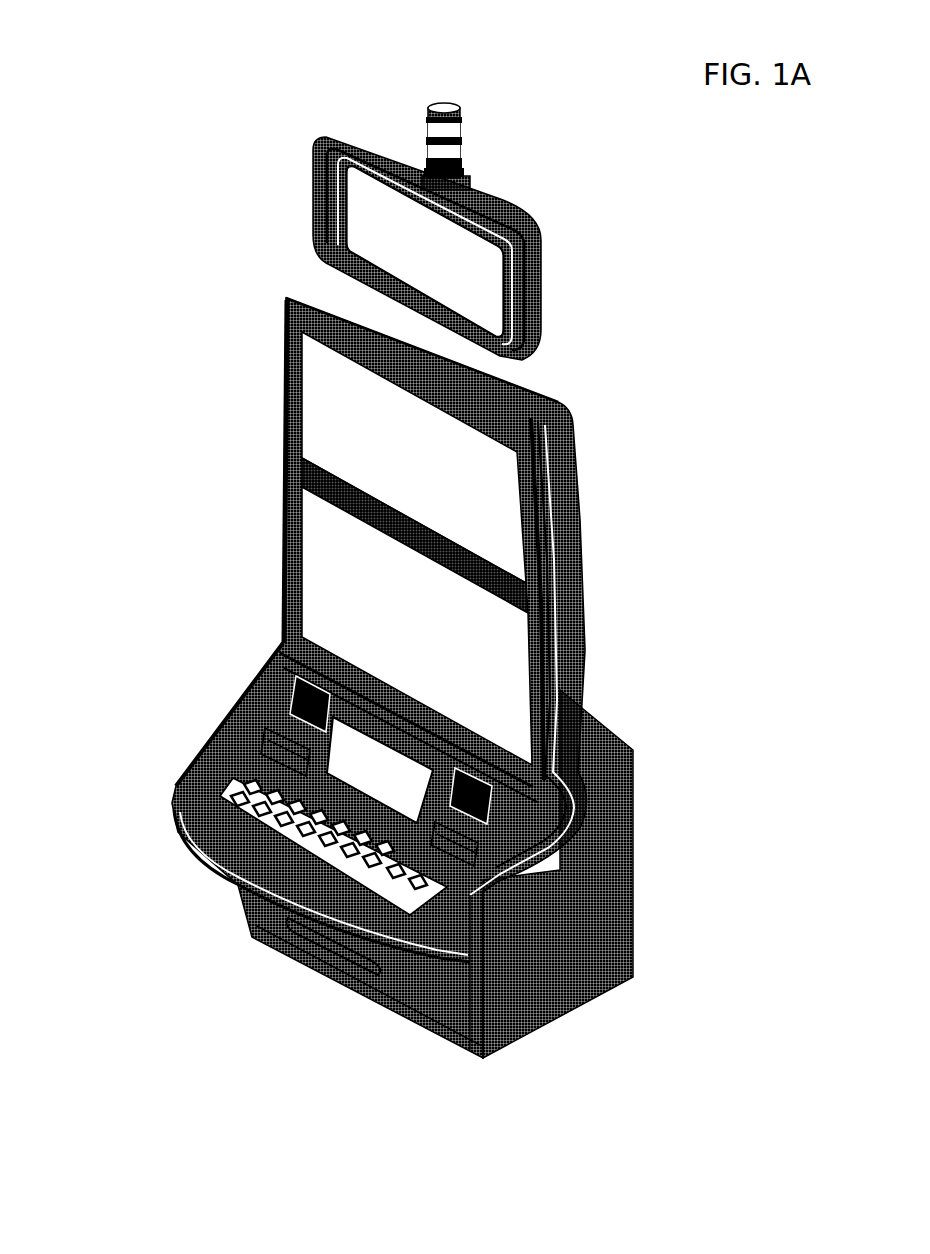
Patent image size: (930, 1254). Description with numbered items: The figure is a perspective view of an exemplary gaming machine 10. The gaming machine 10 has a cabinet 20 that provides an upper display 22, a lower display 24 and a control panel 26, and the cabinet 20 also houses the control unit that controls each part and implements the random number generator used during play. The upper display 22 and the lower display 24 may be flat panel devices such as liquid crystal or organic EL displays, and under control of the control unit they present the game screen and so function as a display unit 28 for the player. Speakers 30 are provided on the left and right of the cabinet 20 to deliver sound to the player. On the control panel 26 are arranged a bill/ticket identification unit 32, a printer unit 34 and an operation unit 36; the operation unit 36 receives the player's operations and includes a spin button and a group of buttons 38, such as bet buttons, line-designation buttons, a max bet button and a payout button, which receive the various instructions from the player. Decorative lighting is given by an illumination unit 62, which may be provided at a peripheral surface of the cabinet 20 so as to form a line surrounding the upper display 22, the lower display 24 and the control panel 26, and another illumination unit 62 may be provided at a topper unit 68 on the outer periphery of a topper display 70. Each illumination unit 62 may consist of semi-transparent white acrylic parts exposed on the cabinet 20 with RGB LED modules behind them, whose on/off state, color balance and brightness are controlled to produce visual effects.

The gaming machine 10 is at (158, 85).
The cabinet 20 is at (650, 600).
The upper display 22 is at (328, 374).
The lower display 24 is at (300, 546).
The control panel 26 is at (178, 792).
The display unit 28 is at (250, 503).
The speakers 30 is at (298, 680).
The bill/ticket identification unit 32 is at (478, 800).
The printer unit 34 is at (290, 723).
The operation unit 36 is at (342, 877).
The group of buttons 38 is at (190, 768).
The illumination unit 62 is at (316, 149).
The topper unit 68 is at (515, 162).
The topper display 70 is at (355, 218).